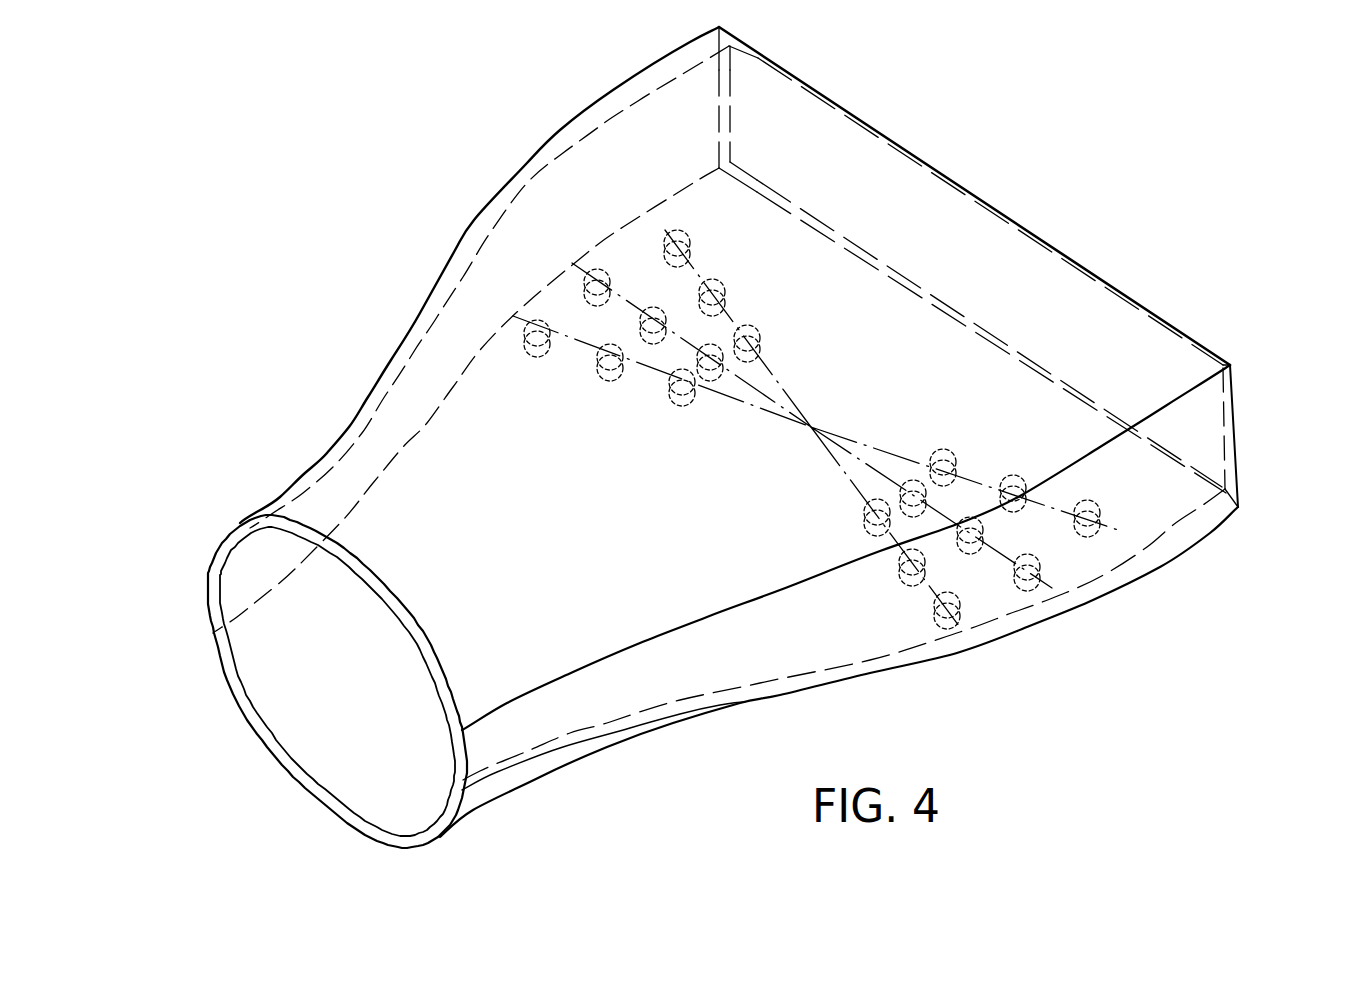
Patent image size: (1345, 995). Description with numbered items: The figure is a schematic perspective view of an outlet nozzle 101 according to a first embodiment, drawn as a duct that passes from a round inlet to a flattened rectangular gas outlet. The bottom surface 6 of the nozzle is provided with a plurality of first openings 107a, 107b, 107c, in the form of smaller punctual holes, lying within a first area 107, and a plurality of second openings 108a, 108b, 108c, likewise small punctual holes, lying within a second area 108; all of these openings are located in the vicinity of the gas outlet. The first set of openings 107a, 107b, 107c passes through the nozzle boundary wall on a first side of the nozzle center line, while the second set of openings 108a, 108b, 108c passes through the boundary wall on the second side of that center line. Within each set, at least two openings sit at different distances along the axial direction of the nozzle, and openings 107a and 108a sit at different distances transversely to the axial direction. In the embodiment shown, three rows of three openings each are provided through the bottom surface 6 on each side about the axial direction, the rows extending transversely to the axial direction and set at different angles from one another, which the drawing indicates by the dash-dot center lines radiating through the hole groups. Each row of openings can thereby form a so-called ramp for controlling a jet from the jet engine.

The outlet nozzle 101 is at (743, 437).
The first area 107 is at (683, 230).
The first opening 107a is at (527, 334).
The first opening 107b is at (585, 282).
The first opening 107c is at (665, 243).
The second area 108 is at (1044, 500).
The second opening 108a is at (933, 607).
The second opening 108b is at (1015, 568).
The second opening 108c is at (1077, 527).
The bottom surface 6 is at (1153, 512).